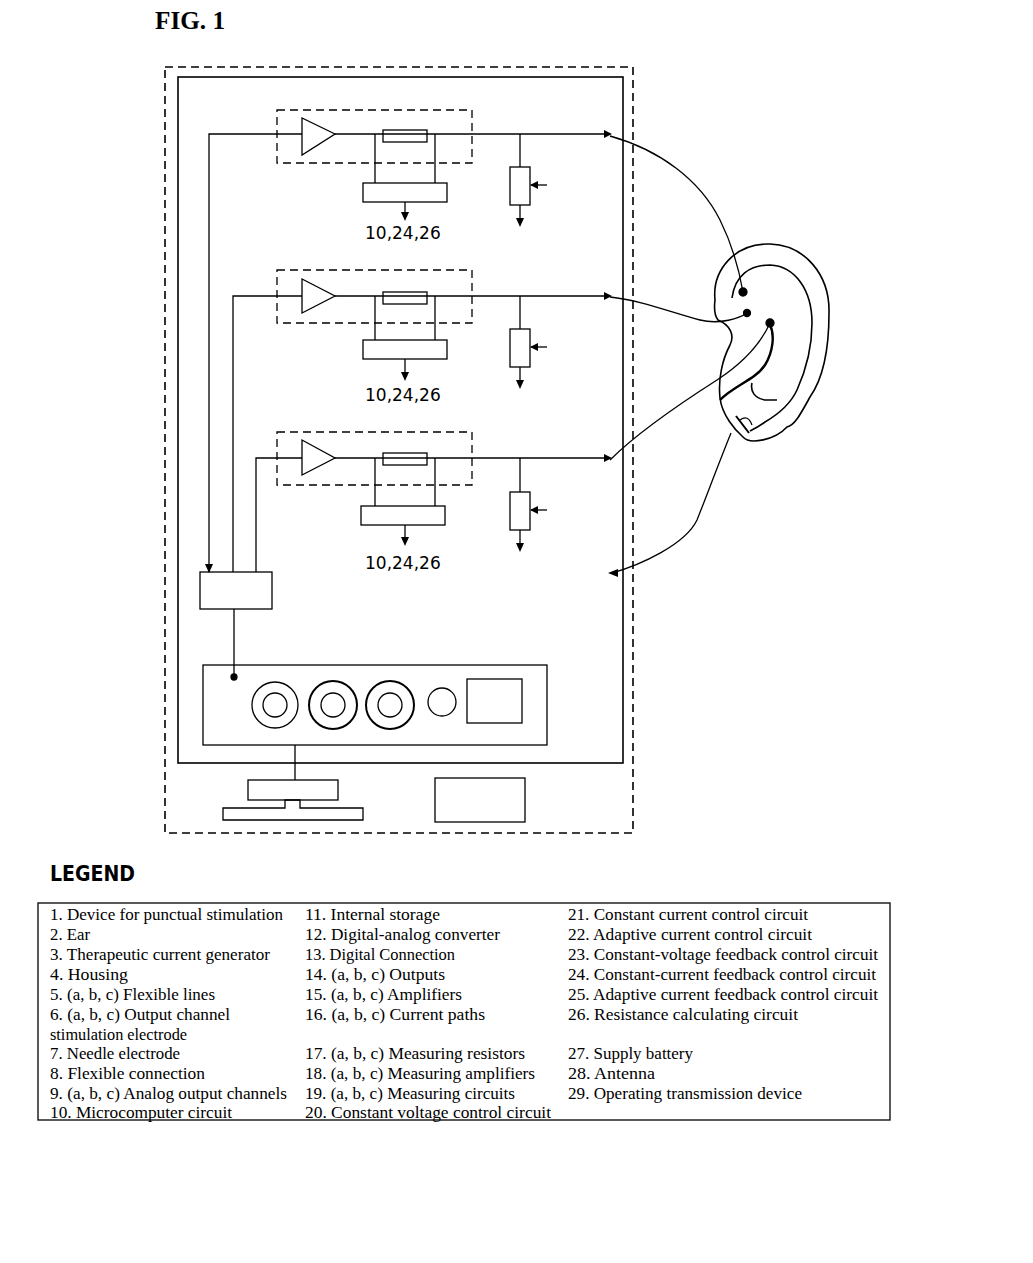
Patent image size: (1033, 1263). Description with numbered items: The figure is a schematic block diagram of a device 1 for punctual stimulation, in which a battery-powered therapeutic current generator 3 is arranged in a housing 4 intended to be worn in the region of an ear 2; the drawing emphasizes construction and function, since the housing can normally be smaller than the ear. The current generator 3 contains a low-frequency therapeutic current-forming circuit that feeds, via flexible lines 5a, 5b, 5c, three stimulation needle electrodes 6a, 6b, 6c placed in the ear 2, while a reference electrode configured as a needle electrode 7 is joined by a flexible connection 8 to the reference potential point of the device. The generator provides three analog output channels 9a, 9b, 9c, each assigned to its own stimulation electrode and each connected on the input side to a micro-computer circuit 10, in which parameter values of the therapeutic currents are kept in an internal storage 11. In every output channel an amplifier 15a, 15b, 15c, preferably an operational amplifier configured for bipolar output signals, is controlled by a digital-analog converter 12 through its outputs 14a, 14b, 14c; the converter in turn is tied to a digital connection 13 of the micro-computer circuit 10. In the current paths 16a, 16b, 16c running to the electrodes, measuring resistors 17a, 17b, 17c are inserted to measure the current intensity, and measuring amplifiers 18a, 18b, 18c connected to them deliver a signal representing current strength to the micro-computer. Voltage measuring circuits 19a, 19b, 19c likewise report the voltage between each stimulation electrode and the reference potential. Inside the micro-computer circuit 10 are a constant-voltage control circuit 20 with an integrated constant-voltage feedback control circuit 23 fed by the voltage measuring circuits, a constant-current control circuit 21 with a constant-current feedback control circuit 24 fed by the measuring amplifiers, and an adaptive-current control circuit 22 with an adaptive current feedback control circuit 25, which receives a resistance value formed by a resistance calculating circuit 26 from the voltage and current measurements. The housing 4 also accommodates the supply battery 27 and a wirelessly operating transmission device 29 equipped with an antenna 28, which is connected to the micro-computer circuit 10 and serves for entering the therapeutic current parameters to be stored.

The device 1 is at (160, 817).
The ear 2 is at (782, 258).
The therapeutic current generator 3 is at (178, 467).
The housing 4 is at (165, 386).
The flexible line 5a is at (704, 196).
The flexible line 5b is at (672, 310).
The flexible line 5c is at (677, 406).
The stimulation needle electrode 6a is at (748, 293).
The stimulation needle electrode 6b is at (751, 313).
The stimulation needle electrode 6c is at (772, 328).
The needle electrode 7 is at (750, 429).
The flexible connection 8 is at (697, 522).
The analog output channel 9a is at (277, 156).
The analog output channel 9b is at (280, 320).
The analog output channel 9c is at (284, 482).
The micro-computer circuit 10 is at (548, 697).
The storage 11 is at (497, 684).
The digital-analog converter 12 is at (272, 592).
The digital connection 13 is at (231, 672).
The output 14a is at (207, 571).
The output 14b is at (236, 569).
The output 14c is at (258, 569).
The amplifier 15a is at (305, 150).
The amplifier 15b is at (305, 310).
The amplifier 15c is at (308, 472).
The current path 16a is at (352, 134).
The current path 16b is at (352, 296).
The current path 16c is at (352, 458).
The measuring resistor 17a is at (405, 130).
The measuring resistor 17b is at (405, 292).
The measuring resistor 17c is at (405, 453).
The measuring amplifier 18a is at (447, 196).
The measuring amplifier 18b is at (447, 354).
The measuring amplifier 18c is at (445, 519).
The voltage measuring circuit 19a is at (531, 168).
The voltage measuring circuit 19b is at (531, 330).
The voltage measuring circuit 19c is at (531, 494).
The constant-voltage control circuit 20 is at (258, 709).
The constant-current control circuit 21 is at (326, 682).
The adaptive-current control circuit 22 is at (393, 682).
The constant-voltage feedback control circuit 23 is at (277, 693).
The constant-current feedback control circuit 24 is at (342, 694).
The adaptive current feedback control circuit 25 is at (405, 699).
The resistance calculating circuit 26 is at (447, 690).
The supply battery 27 is at (525, 800).
The antenna 28 is at (363, 815).
The transmission device 29 is at (338, 791).